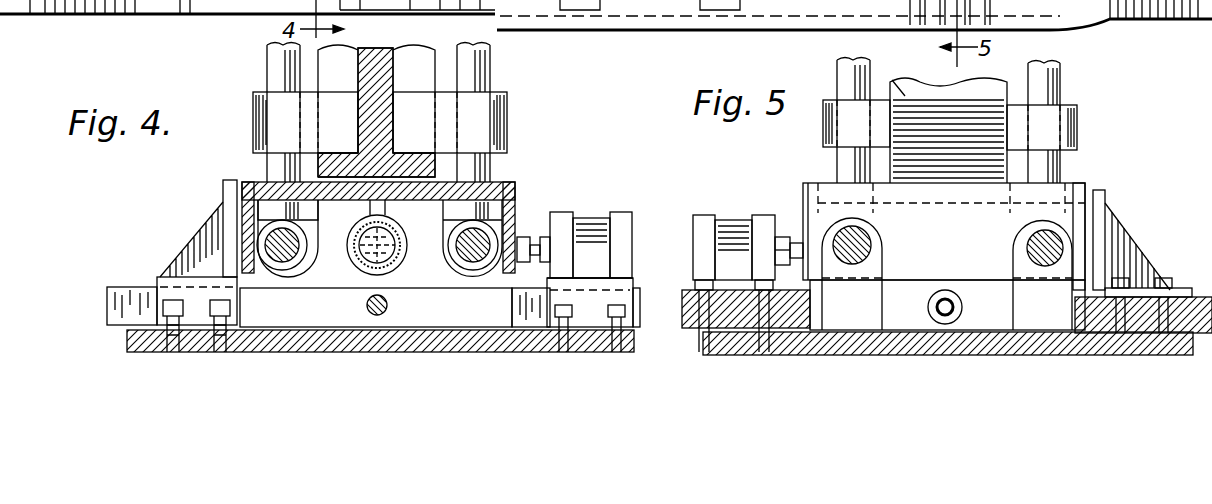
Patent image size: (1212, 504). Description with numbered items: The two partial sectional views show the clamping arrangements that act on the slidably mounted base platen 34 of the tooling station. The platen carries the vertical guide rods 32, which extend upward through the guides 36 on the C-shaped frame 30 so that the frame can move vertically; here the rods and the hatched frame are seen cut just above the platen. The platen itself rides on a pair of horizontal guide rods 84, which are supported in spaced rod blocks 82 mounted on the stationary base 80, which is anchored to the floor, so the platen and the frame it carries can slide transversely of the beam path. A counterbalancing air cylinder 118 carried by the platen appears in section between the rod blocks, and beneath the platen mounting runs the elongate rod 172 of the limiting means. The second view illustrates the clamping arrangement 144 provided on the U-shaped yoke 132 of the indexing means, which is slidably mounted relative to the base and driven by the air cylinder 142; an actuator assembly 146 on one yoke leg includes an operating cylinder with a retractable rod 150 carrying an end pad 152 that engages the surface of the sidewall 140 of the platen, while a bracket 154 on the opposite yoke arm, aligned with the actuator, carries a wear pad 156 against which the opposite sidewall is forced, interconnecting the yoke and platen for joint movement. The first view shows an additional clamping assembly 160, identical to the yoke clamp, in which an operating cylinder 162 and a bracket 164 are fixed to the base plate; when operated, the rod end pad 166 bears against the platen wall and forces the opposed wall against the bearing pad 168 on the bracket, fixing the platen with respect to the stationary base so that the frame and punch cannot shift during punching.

In FIG. 4, the C-shaped frame 30 is at (420, 66).
In FIG. 5, the C-shaped frame 30 is at (944, 115).
In FIG. 4, the guide rods 32 is at (275, 65).
In FIG. 5, the guide rods 32 is at (846, 78).
In FIG. 4, the base platen 34 is at (506, 178).
In FIG. 5, the base platen 34 is at (1068, 185).
In FIG. 4, the guides 36 is at (255, 112).
In FIG. 5, the guides 36 is at (824, 127).
In FIG. 4, the stationary base 80 is at (128, 341).
In FIG. 5, the stationary base 80 is at (898, 340).
In FIG. 4, the rod blocks 82 is at (280, 270).
In FIG. 5, the rod blocks 82 is at (862, 271).
In FIG. 4, the horizontal guide rods 84 is at (290, 235).
In FIG. 5, the horizontal guide rods 84 is at (877, 231).
In FIG. 4, the counterbalancing air cylinder 118 is at (393, 256).
In FIG. 4, the yoke 132 is at (131, 292).
In FIG. 5, the yoke 132 is at (1193, 290).
In FIG. 4, the sidewall 140 is at (517, 194).
In FIG. 5, the air cylinder 142 is at (703, 343).
In FIG. 5, the clamping arrangement 144 is at (713, 198).
In FIG. 5, the actuator assembly 146 is at (736, 225).
In FIG. 5, the retractable rod 150 is at (812, 296).
In FIG. 5, the end pad 152 is at (795, 242).
In FIG. 5, the bracket 154 is at (1117, 238).
In FIG. 5, the wear pad 156 is at (1123, 187).
In FIG. 4, the clamping assembly 160 is at (612, 198).
In FIG. 4, the operating cylinder 162 is at (600, 235).
In FIG. 4, the bracket 164 is at (207, 243).
In FIG. 4, the rod end pad 166 is at (525, 235).
In FIG. 4, the bearing pad 168 is at (262, 196).
In FIG. 4, the elongate rod 172 is at (388, 306).
In FIG. 5, the elongate rod 172 is at (962, 309).